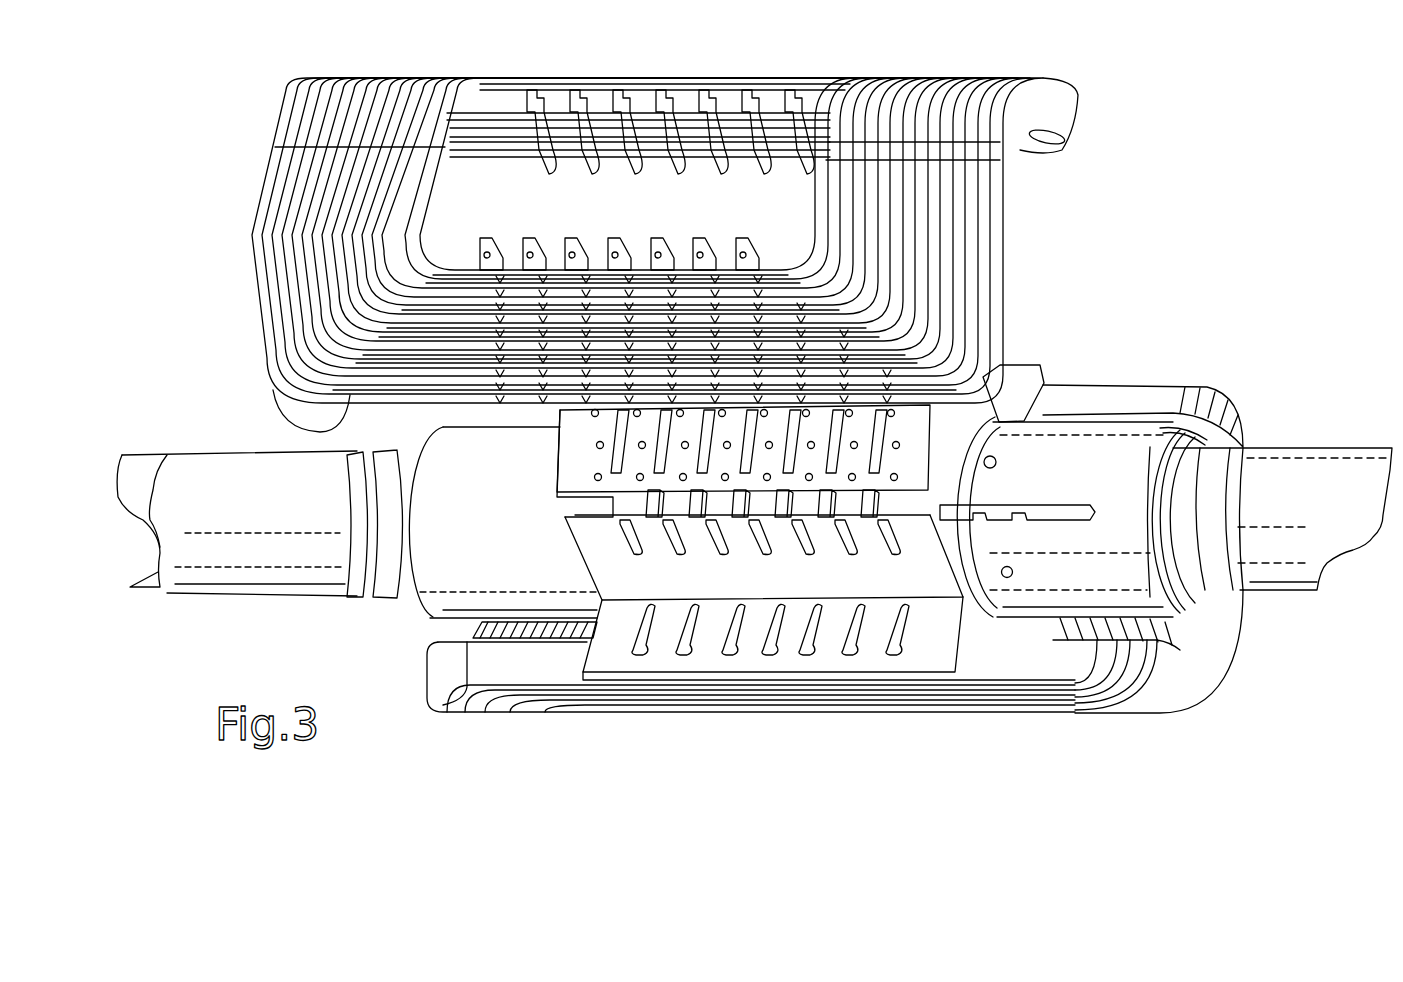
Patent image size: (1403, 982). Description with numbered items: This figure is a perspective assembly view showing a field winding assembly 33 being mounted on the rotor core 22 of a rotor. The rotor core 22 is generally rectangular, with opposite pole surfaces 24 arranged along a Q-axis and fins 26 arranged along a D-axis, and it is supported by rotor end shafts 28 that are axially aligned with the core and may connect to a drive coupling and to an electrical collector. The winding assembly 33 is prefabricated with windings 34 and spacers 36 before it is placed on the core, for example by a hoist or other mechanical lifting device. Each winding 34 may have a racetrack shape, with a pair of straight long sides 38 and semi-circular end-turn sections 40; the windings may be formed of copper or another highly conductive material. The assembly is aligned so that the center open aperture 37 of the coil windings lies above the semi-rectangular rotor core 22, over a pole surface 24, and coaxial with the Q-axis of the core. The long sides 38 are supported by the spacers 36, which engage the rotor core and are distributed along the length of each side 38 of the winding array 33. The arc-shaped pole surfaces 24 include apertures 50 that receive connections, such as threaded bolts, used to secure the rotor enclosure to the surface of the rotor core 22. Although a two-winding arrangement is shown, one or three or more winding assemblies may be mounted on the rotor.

The rotor core 22 is at (594, 545).
The pole surface 24 is at (907, 452).
The fins 26 is at (838, 662).
The rotor end shaft 28 is at (313, 595).
The field winding assembly 33 is at (1030, 104).
The winding 34 is at (390, 82).
The spacer 36 is at (486, 232).
The center open aperture 37 is at (677, 208).
The straight long side 38 is at (745, 75).
The end-turn section 40 is at (493, 50).
The aperture 50 is at (600, 447).